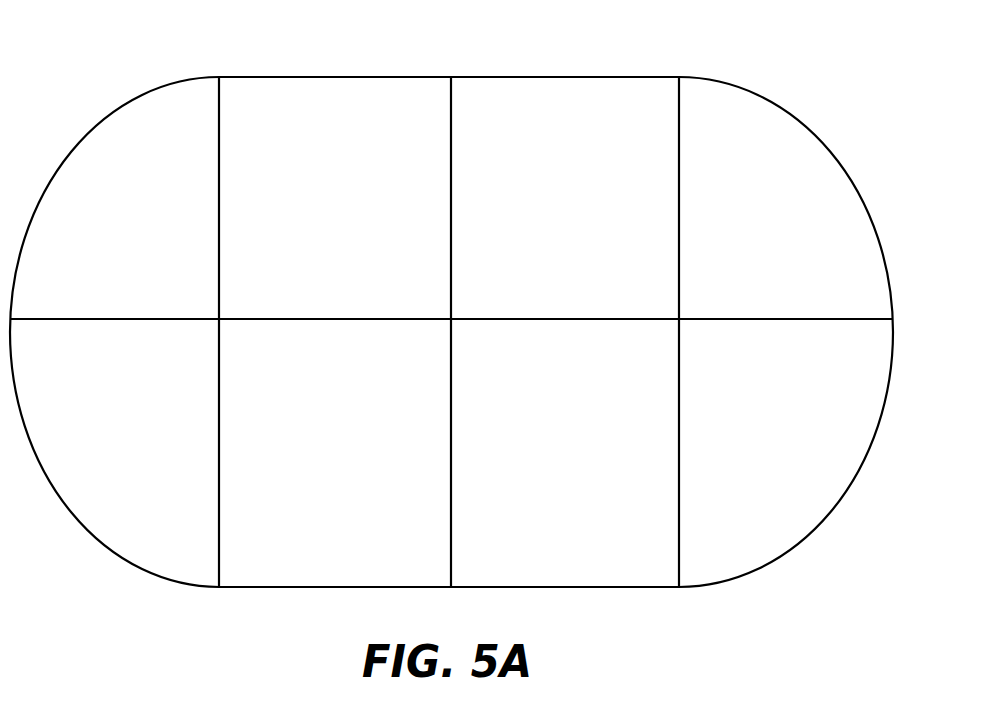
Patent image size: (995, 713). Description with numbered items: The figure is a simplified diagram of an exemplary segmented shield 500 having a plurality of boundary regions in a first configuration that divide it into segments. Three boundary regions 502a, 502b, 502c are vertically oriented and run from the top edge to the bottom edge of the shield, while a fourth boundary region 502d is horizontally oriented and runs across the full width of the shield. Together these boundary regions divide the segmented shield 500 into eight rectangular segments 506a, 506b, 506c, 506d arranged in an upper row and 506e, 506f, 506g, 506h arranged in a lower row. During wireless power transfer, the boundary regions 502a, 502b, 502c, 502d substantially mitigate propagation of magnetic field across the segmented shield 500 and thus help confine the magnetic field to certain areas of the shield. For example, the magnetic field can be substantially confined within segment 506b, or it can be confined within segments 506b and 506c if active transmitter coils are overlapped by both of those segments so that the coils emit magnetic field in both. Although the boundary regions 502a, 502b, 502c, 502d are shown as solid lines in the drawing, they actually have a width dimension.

The segmented shield 500 is at (163, 95).
The boundary region 502a is at (221, 156).
The boundary region 502b is at (453, 156).
The boundary region 502c is at (681, 156).
The boundary region 502d is at (842, 290).
The segment 506a is at (155, 247).
The segment 506b is at (366, 247).
The segment 506c is at (591, 247).
The segment 506d is at (801, 247).
The segment 506e is at (158, 436).
The segment 506f is at (370, 436).
The segment 506g is at (595, 436).
The segment 506h is at (804, 436).